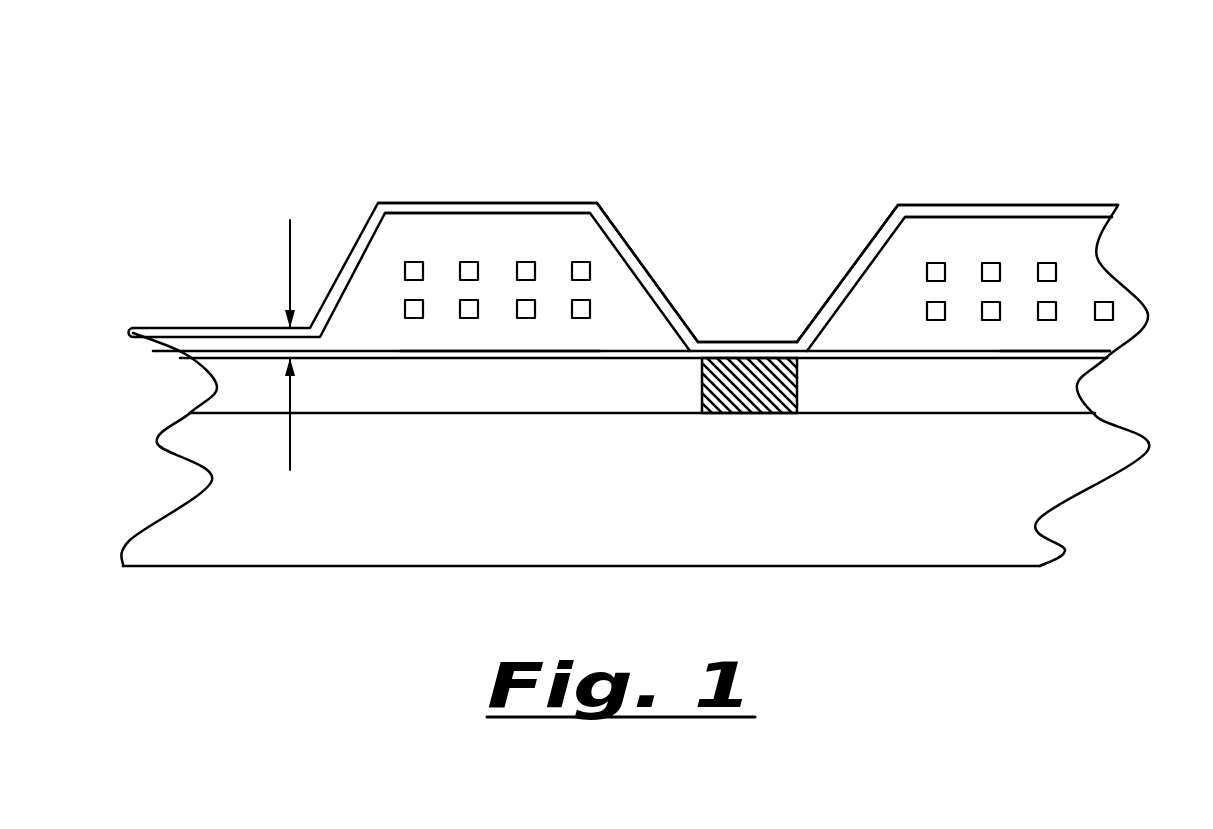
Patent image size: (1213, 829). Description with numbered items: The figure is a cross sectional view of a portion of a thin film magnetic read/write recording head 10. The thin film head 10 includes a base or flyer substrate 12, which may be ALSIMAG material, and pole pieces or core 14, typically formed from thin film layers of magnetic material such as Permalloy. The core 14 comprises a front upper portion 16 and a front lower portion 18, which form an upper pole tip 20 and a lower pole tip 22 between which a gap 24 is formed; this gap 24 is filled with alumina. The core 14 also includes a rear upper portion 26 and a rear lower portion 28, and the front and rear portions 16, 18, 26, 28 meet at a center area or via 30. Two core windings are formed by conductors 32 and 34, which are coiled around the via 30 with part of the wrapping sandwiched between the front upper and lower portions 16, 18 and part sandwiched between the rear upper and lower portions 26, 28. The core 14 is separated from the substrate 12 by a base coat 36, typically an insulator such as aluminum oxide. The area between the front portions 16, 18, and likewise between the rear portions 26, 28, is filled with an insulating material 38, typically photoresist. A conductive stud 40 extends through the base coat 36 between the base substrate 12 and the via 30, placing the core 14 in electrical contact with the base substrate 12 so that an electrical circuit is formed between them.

The thin film magnetic head 10 is at (255, 118).
The flyer substrate 12 is at (400, 537).
The core 14 is at (630, 245).
The front upper portion 16 is at (405, 208).
The front lower portion 18 is at (445, 353).
The upper pole tip 20 is at (200, 332).
The lower pole tip 22 is at (205, 355).
The gap 24 is at (287, 342).
The rear upper portion 26 is at (1033, 212).
The rear lower portion 28 is at (1043, 358).
The via 30 is at (770, 343).
The conductors 32 is at (582, 270).
The conductors 34 is at (415, 313).
The base coat 36 is at (252, 390).
The insulating material 38 is at (585, 235).
The conductive stud 40 is at (745, 388).